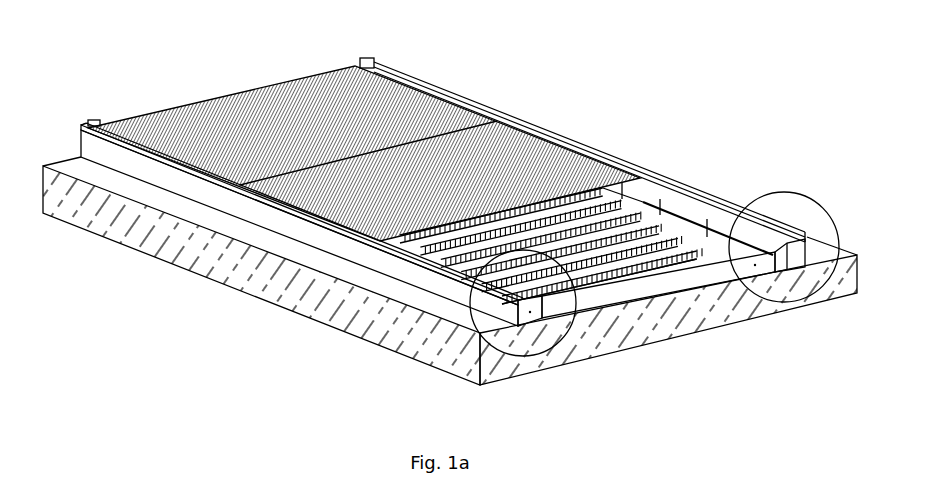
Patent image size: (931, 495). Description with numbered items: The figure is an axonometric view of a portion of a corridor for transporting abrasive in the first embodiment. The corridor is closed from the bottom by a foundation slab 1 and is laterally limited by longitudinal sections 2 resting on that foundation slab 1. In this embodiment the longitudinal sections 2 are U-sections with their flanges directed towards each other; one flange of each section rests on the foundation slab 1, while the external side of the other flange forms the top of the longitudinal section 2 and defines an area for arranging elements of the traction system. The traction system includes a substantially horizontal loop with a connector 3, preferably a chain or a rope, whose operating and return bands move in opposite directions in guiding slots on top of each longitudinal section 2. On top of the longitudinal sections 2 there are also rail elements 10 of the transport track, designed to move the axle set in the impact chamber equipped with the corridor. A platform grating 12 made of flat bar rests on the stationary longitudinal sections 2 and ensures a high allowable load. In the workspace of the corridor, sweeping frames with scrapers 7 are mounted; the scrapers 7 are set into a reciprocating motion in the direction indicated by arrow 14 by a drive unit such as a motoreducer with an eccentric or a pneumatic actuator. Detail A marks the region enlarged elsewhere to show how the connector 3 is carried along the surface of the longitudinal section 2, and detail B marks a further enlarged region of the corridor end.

The foundation slab 1 is at (673, 315).
The longitudinal section 2 is at (437, 282).
The connector 3 is at (400, 250).
The scrapers 7 is at (608, 270).
The rail elements 10 is at (88, 123).
The platform grating 12 is at (385, 108).
The arrow indicating reciprocating motion direction 14 is at (597, 258).
The detail A is at (792, 193).
The detail B is at (472, 306).